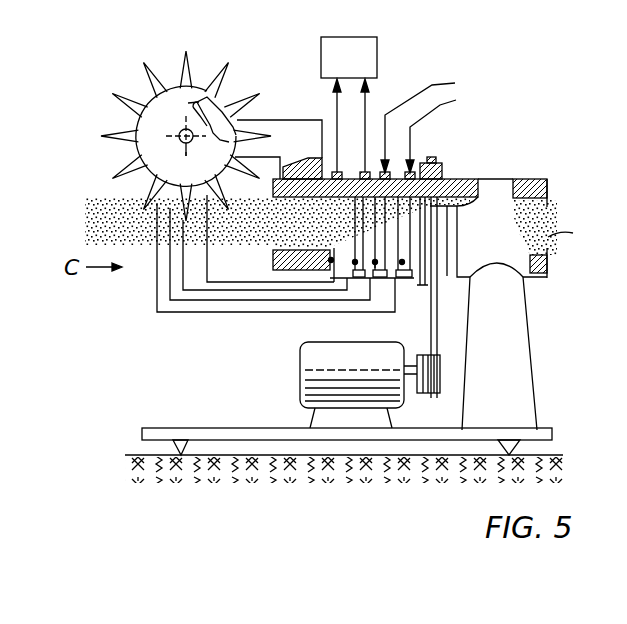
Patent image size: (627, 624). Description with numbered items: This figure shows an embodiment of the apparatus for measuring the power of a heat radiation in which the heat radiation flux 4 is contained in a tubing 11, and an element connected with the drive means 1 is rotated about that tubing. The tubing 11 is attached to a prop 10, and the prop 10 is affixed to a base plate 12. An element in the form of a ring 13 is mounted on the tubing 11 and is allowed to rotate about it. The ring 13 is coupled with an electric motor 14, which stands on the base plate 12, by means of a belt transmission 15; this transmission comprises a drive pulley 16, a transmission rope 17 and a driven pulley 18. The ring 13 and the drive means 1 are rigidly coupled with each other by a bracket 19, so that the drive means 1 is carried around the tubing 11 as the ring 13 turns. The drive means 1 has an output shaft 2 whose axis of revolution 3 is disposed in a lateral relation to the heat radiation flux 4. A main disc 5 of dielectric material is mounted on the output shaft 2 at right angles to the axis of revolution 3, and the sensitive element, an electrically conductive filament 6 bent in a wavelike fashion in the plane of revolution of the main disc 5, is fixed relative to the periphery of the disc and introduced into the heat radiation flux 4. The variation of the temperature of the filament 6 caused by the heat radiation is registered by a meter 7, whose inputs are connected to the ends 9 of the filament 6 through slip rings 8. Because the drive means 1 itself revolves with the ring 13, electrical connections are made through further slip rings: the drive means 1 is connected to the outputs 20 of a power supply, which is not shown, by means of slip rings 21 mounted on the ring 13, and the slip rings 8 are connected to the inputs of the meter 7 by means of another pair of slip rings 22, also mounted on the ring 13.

The drive means 1 is at (187, 107).
The output shaft 2 is at (177, 136).
The axis of revolution 3 is at (188, 165).
The heat radiation flux 4 is at (568, 234).
The main disc 5 is at (134, 158).
The electrically conductive filament 6 is at (144, 72).
The meter 7 is at (349, 108).
The slip rings 8 is at (214, 130).
The ends of the filament 9 is at (226, 91).
The prop 10 is at (528, 346).
The tubing 11 is at (549, 187).
The base plate 12 is at (558, 417).
The ring 13 is at (352, 183).
The electric motor 14 is at (318, 360).
The belt transmission 15 is at (416, 321).
The drive pulley 16 is at (420, 393).
The transmission rope 17 is at (437, 314).
The driven pulley 18 is at (443, 171).
The bracket 19 is at (284, 132).
The outputs of a power supply 20 is at (432, 123).
The slip rings 21 is at (402, 262).
The slip rings 22 is at (355, 262).